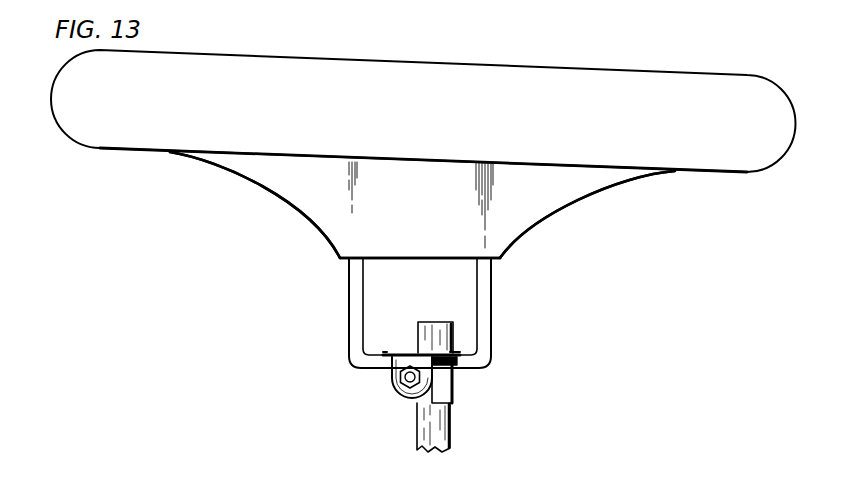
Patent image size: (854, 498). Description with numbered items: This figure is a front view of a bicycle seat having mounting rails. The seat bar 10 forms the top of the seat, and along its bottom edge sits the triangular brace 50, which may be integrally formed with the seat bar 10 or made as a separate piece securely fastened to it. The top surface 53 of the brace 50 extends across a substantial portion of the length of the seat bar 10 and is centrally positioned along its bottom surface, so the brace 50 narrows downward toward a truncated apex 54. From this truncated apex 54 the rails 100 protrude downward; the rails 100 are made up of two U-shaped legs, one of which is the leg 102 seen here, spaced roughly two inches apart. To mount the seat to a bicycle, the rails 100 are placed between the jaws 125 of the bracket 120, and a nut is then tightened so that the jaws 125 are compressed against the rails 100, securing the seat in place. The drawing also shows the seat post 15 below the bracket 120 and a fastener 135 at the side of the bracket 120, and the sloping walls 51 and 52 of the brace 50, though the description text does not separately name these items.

The seat bar 10 is at (552, 65).
The post 15 is at (443, 428).
The triangular brace 50 is at (535, 216).
The left curved wall of shroud 51 is at (268, 190).
The right curved wall of shroud 52 is at (608, 183).
The top surface 53 is at (393, 160).
The truncated apex 54 is at (405, 262).
The rails 100 is at (375, 347).
The U-shaped leg 102 is at (483, 300).
The bracket 120 is at (461, 383).
The jaws 125 is at (447, 353).
The bolt and nut 135 is at (398, 378).